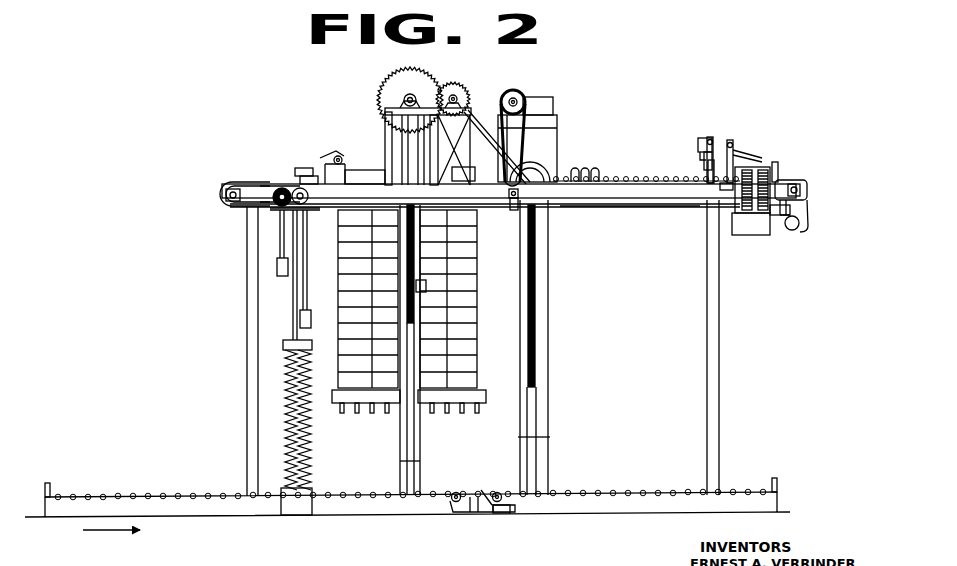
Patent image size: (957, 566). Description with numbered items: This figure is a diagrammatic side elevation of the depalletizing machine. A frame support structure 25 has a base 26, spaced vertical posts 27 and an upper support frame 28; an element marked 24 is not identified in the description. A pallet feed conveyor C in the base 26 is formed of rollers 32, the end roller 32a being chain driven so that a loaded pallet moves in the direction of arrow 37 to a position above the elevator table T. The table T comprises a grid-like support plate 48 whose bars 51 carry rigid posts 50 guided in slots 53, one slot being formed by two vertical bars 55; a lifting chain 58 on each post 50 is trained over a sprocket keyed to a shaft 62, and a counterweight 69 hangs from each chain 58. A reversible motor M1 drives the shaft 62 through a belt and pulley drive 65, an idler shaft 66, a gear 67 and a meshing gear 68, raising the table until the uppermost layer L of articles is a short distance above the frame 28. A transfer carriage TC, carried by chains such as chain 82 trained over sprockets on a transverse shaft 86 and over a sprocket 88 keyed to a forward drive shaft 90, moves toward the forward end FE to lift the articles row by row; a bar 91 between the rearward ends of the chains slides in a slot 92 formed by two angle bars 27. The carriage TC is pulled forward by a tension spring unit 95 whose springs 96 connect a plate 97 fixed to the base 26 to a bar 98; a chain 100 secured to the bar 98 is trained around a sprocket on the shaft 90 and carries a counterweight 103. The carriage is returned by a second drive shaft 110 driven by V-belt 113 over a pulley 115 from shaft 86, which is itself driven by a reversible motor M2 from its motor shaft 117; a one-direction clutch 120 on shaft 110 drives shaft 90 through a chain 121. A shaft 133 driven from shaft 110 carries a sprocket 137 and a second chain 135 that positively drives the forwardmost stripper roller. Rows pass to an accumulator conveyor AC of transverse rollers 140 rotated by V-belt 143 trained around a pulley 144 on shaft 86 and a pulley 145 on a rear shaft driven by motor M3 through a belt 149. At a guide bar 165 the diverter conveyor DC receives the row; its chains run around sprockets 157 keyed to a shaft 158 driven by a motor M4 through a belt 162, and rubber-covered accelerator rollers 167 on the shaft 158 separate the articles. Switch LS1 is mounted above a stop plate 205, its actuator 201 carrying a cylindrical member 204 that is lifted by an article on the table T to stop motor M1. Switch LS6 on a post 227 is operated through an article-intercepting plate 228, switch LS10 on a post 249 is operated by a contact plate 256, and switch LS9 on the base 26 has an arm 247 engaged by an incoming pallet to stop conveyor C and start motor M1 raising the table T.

The saw carriage assembly 24 is at (330, 98).
The frame support structure 25 is at (242, 312).
The base 26 is at (388, 512).
The vertical posts 27 is at (249, 378).
The upper support frame 28 is at (567, 200).
The rollers 32 is at (230, 495).
The end roller 32a is at (58, 494).
The reference arrow 37 is at (100, 532).
The grid-like support plate 48 is at (384, 411).
The rigid post 50 is at (398, 408).
The bar 51 is at (478, 394).
The guide slot 53 is at (413, 436).
The vertical bars 55 is at (401, 461).
The lifting chain 58 is at (448, 245).
The shaft 62 is at (404, 99).
The belt and pulley drive 65 is at (472, 110).
The idler shaft 66 is at (452, 95).
The gear 67 is at (470, 93).
The gear 68 is at (400, 80).
The counterweight 69 is at (427, 284).
The chain 82 is at (450, 170).
The transverse shaft 86 is at (519, 194).
The sprocket 88 is at (287, 187).
The forward transverse rotary drive shaft 90 is at (309, 196).
The bar 91 is at (540, 386).
The slot 92 is at (540, 410).
The tension spring unit 95 is at (282, 362).
The springs 96 is at (286, 432).
The plate 97 is at (295, 516).
The bar 98 is at (292, 340).
The chain 100 is at (293, 286).
The counterweight 103 is at (307, 318).
The second transverse drive shaft 110 is at (290, 205).
The V-belt 113 is at (358, 212).
The pulley 115 is at (280, 212).
The motor drive shaft 117 is at (517, 99).
The one-direction clutch 120 is at (276, 200).
The chain 121 is at (262, 186).
The shaft 133 is at (224, 204).
The second chain 135 is at (223, 184).
The sprocket 137 is at (222, 192).
The transverse rollers 140 is at (595, 170).
The V-belt 143 is at (600, 209).
The pulley 144 is at (512, 205).
The pulley 145 is at (793, 180).
The belt 149 is at (801, 233).
The sprocket 157 is at (741, 208).
The shaft 158 is at (740, 203).
The belt 162 is at (748, 228).
The guide bar 165 is at (774, 165).
The accelerator rollers 167 is at (736, 182).
The actuator 201 is at (319, 160).
The cylindrical member 204 is at (339, 156).
The transverse stop plate 205 is at (352, 182).
The post 227 is at (709, 138).
The article-intercepting plate 228 is at (731, 140).
The switch arm 247 is at (482, 491).
The post 249 is at (708, 166).
The contact plate 256 is at (704, 156).
The accumulator conveyor AC is at (613, 176).
The pallet feed conveyor C is at (135, 485).
The diverter conveyor DC is at (735, 197).
The forward end FE is at (312, 165).
The layer L is at (381, 172).
The switch LS1 is at (303, 168).
The switch LS6 is at (699, 142).
The switch LS9 is at (502, 513).
The switch LS10 is at (701, 150).
The reversible motor M1 is at (542, 168).
The reversible motor M2 is at (542, 97).
The motor M3 is at (787, 232).
The motor M4 is at (740, 214).
The elevator table T is at (479, 414).
The transfer carriage TC is at (540, 282).